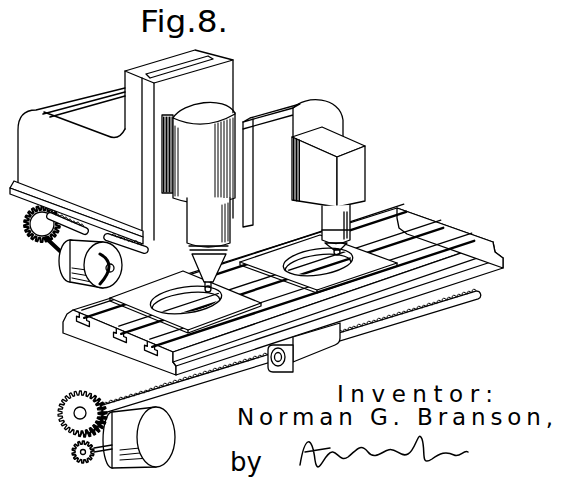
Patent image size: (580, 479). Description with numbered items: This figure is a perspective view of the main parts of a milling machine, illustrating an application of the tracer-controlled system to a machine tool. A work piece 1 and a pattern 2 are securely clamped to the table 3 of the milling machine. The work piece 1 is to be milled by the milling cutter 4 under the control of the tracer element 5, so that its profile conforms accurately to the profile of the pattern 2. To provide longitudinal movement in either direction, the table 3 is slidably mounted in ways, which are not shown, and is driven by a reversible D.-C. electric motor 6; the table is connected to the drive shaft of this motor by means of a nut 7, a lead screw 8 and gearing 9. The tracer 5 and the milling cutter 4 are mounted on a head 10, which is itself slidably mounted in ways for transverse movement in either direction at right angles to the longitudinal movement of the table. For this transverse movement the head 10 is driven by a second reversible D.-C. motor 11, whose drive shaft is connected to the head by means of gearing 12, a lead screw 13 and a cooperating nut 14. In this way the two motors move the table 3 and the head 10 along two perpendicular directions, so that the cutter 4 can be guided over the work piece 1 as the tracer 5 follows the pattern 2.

The work piece 1 is at (163, 289).
The pattern 2 is at (277, 262).
The table 3 is at (456, 239).
The milling cutter 4 is at (205, 290).
The tracer element 5 is at (345, 221).
The reversible D.-C. electric motor 6 is at (158, 458).
The nut 7 is at (299, 352).
The lead screw 8 is at (217, 377).
The gearing 9 is at (72, 447).
The head 10 is at (220, 86).
The reversible D.-C. motor 11 is at (73, 277).
The gearing 12 is at (43, 232).
The lead screw 13 is at (134, 243).
The nut 14 is at (96, 233).